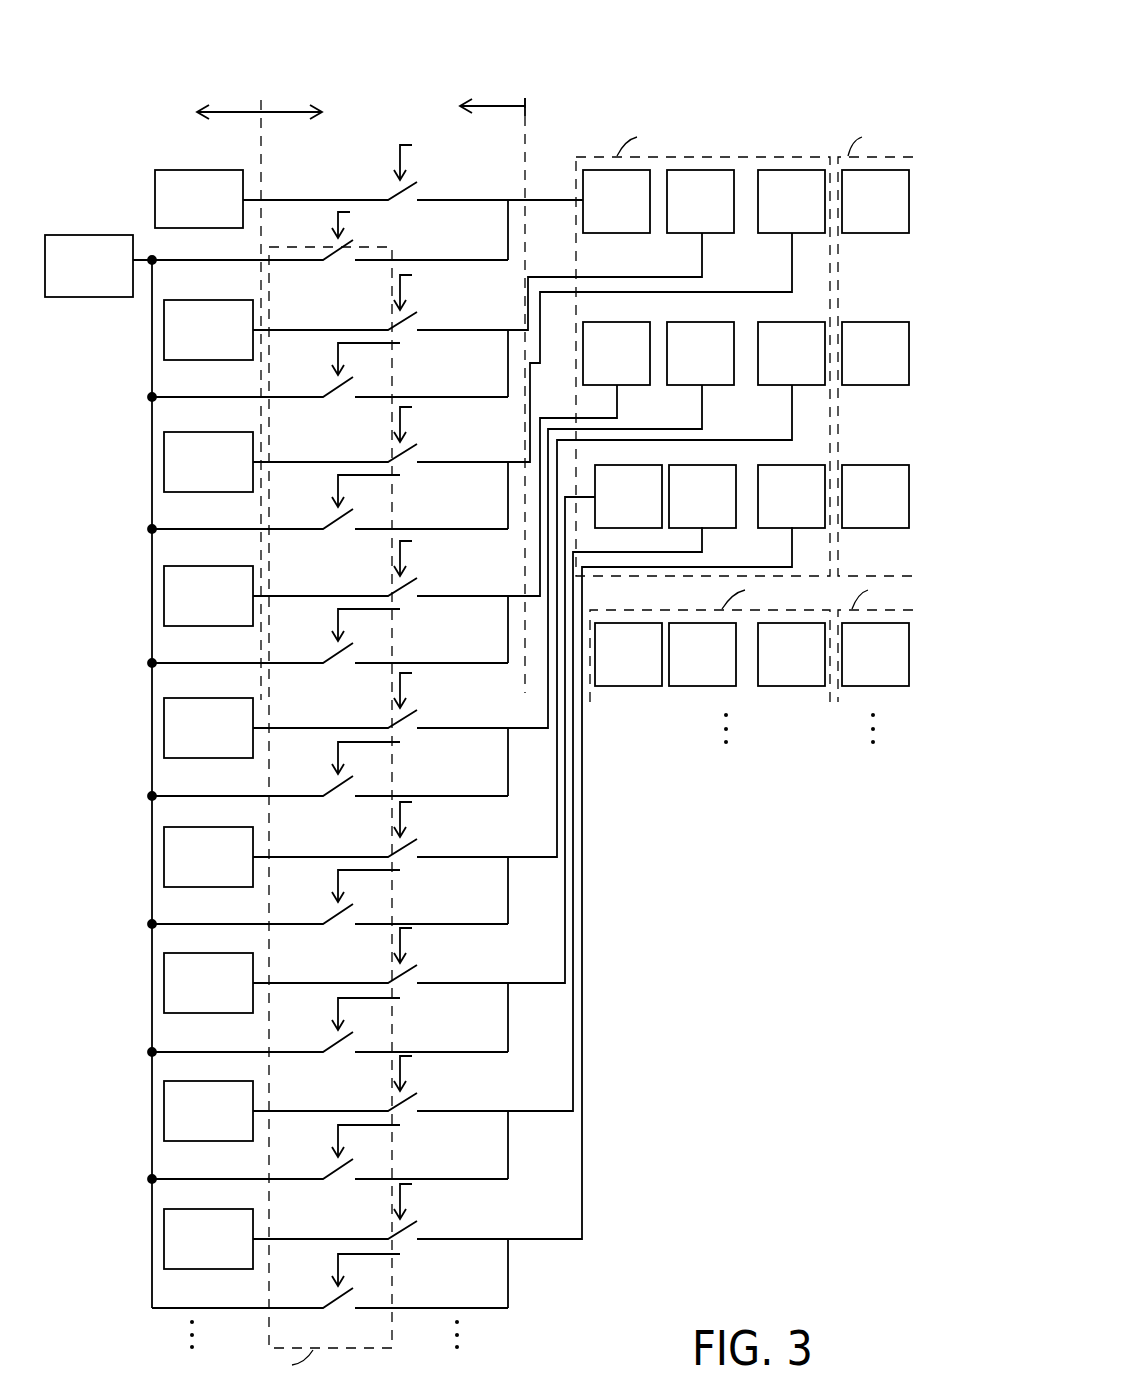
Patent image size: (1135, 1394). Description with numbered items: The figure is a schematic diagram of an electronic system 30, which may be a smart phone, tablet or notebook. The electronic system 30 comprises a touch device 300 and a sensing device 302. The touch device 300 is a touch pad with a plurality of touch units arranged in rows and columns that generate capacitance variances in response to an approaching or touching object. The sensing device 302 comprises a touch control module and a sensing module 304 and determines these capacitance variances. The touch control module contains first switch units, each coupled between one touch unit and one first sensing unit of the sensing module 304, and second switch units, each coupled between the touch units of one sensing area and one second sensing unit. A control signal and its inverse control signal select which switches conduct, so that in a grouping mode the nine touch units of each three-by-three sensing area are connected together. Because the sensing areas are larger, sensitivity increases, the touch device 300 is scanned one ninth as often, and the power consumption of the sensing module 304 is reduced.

The electronic system 30 is at (152, 26).
The touch device 300 is at (540, 90).
The sensing device 302 is at (40, 90).
The sensing module 304 is at (183, 671).